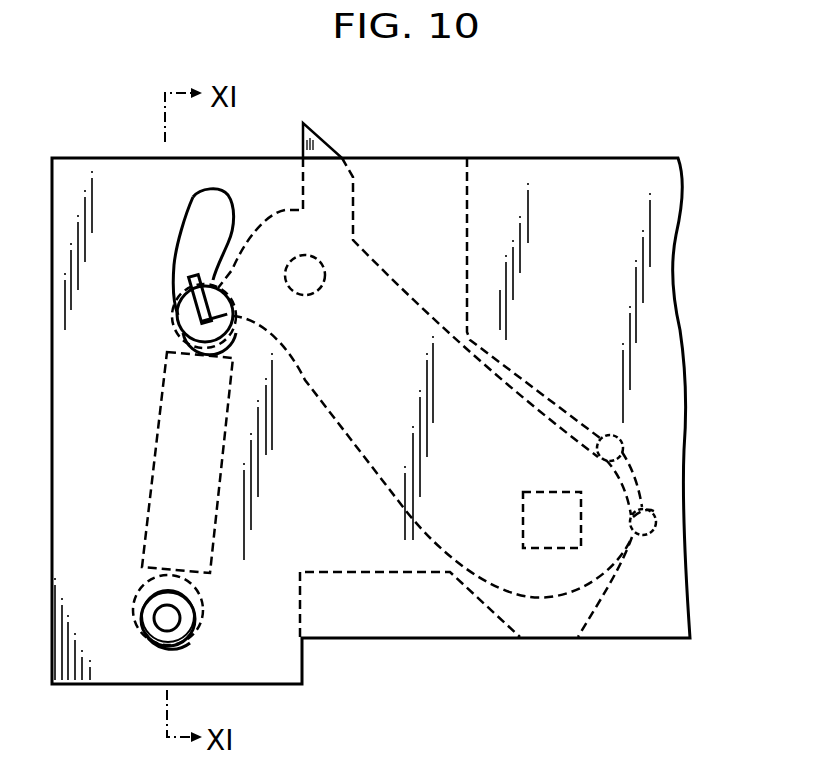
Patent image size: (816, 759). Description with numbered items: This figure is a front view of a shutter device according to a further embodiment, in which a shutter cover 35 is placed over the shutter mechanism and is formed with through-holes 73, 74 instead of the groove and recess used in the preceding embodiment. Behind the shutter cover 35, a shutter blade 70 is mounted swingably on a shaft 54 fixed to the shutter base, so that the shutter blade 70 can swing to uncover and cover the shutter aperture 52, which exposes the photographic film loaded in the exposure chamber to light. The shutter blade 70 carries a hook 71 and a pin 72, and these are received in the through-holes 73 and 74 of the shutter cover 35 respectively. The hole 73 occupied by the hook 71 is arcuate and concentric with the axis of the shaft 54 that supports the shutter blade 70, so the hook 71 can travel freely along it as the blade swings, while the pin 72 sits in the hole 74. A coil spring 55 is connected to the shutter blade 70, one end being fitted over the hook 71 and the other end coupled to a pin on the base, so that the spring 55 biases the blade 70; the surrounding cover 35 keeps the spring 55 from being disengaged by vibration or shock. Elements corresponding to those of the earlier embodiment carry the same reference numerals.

The shutter cover 35 is at (387, 130).
The shutter blade 70 is at (384, 272).
The shaft 54 is at (308, 296).
The shutter aperture 52 is at (557, 493).
The through-hole 73 is at (183, 258).
The hook 71 is at (178, 321).
The coil spring 55 is at (153, 472).
The pin 72 is at (172, 621).
The through-hole 74 is at (162, 645).